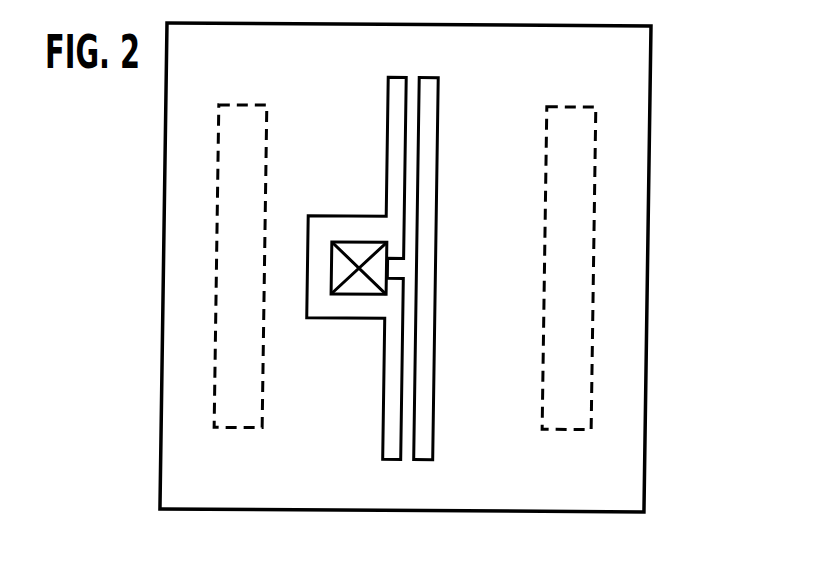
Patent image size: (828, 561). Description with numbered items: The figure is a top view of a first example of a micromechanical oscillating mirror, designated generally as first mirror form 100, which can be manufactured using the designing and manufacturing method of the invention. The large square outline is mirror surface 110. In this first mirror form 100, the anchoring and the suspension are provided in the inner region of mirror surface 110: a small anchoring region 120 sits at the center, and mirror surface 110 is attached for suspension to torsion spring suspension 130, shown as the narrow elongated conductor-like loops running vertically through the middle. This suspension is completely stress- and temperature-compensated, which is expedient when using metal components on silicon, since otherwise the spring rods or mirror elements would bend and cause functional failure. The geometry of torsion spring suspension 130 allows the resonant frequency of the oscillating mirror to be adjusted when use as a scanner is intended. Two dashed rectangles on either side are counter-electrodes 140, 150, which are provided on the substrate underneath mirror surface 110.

The first mirror form 100 is at (664, 106).
The mirror surface 110 is at (168, 447).
The anchoring region 120 is at (361, 287).
The torsion spring suspension 130 is at (412, 158).
The counter-electrode 140 is at (240, 105).
The counter-electrode 150 is at (566, 105).